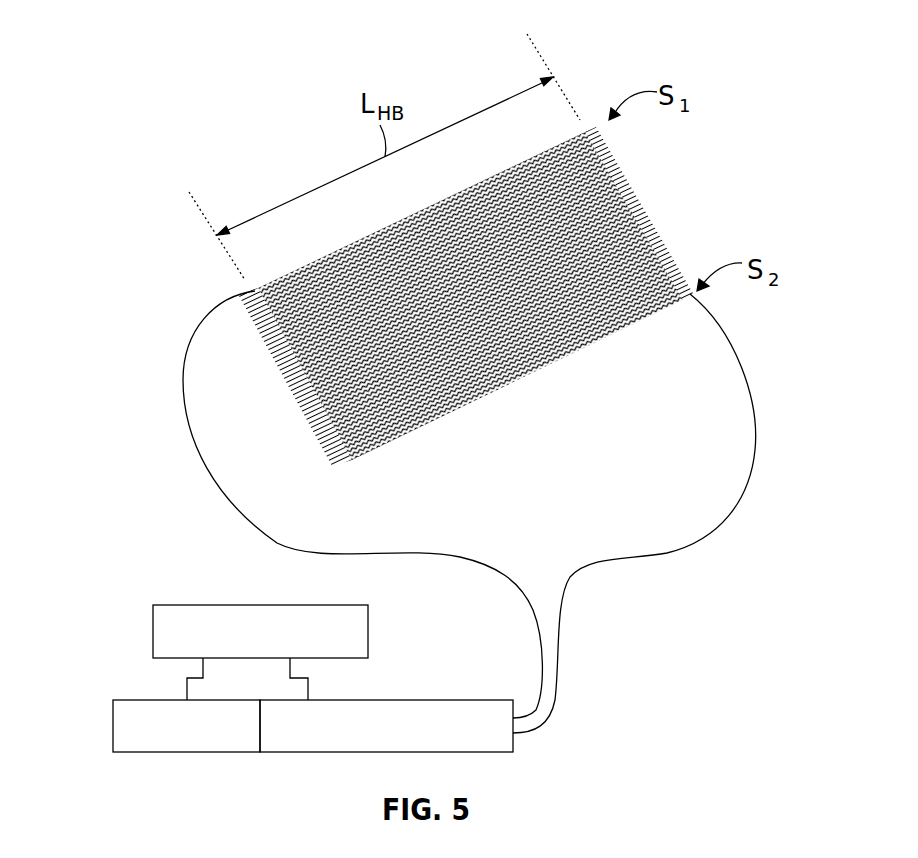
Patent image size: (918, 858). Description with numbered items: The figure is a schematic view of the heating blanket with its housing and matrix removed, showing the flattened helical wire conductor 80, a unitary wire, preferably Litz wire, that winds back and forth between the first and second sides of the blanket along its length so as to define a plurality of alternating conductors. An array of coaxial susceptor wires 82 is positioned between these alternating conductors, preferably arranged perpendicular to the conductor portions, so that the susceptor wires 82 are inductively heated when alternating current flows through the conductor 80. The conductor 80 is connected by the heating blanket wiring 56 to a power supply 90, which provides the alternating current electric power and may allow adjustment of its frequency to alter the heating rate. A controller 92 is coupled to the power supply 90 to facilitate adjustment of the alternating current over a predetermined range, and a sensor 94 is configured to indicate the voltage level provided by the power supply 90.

The heating blanket wiring 56 is at (557, 663).
The helical wire conductor 80 is at (526, 414).
The coaxial susceptor wires 82 is at (331, 474).
The power supply 90 is at (385, 753).
The controller 92 is at (153, 633).
The sensor 94 is at (187, 753).